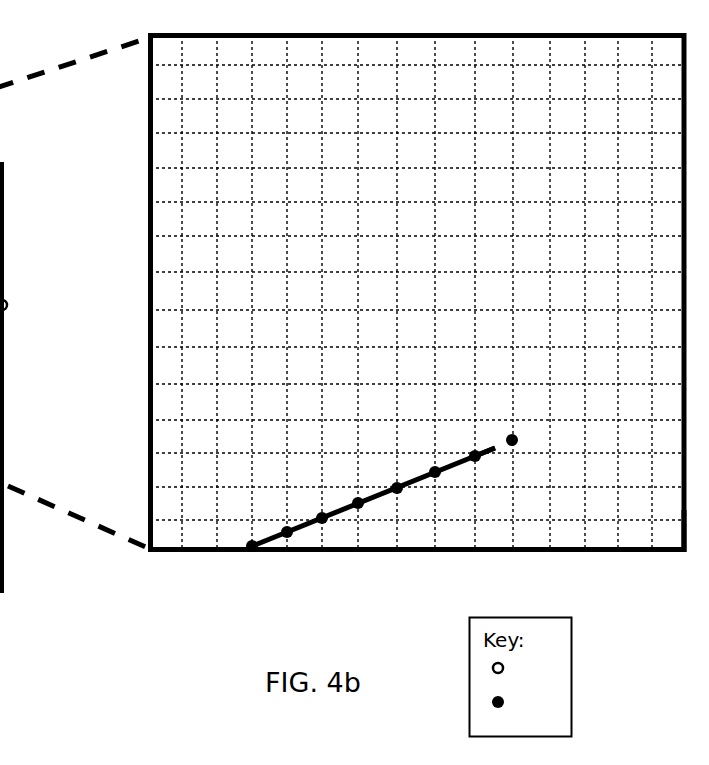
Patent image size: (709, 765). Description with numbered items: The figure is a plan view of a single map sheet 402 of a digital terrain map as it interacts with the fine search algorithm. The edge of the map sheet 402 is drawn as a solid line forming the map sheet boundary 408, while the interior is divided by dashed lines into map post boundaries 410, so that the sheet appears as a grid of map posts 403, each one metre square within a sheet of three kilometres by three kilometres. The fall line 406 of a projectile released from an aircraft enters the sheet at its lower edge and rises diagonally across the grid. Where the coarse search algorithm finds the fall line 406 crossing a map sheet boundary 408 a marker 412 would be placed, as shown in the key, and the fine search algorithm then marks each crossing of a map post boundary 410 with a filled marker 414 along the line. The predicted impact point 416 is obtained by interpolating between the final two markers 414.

The map sheet 402 is at (195, 553).
The map post 403 is at (685, 552).
The fall line 406 is at (340, 507).
The map sheet boundary 408 is at (148, 140).
The map post boundary 410 is at (182, 215).
The marker 412 is at (524, 673).
The marker 414 is at (401, 576).
The predicted impact point 416 is at (493, 447).